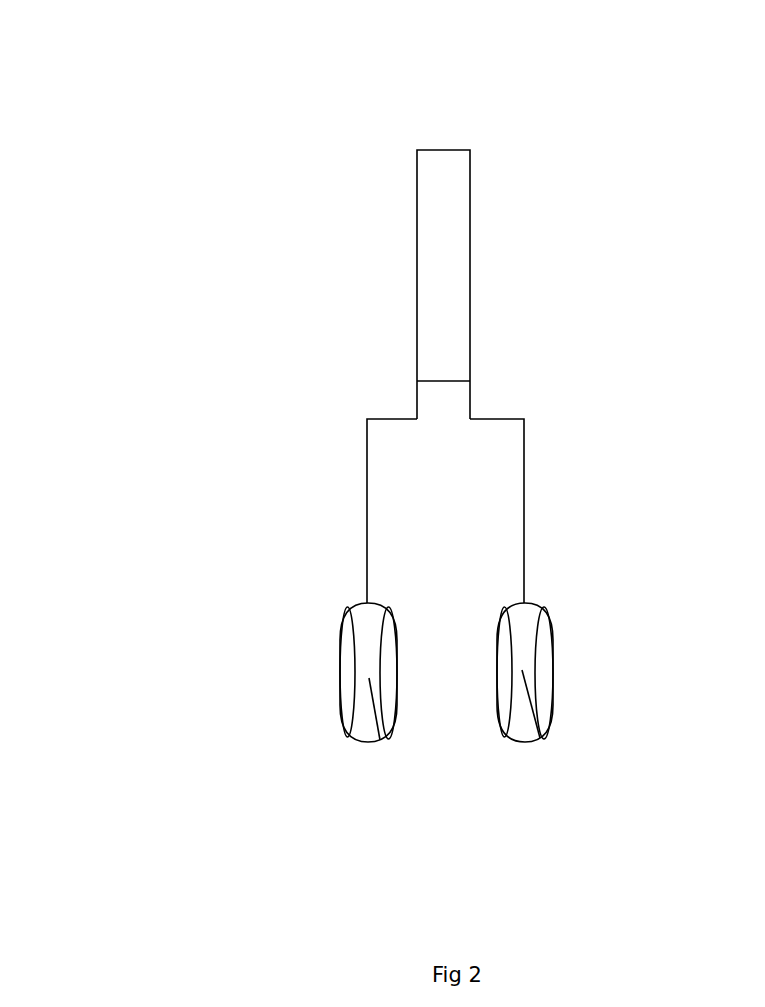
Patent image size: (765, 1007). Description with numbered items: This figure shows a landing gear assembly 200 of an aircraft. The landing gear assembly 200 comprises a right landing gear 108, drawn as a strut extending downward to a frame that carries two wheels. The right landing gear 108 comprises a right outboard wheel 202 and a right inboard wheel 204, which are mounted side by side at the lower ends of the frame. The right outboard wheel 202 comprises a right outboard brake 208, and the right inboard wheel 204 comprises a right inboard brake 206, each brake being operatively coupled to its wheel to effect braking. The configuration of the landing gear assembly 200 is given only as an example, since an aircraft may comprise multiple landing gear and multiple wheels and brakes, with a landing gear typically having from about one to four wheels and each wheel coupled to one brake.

The landing gear assembly 200 is at (127, 75).
The right landing gear 108 is at (485, 248).
The right outboard wheel 202 is at (567, 663).
The right inboard wheel 204 is at (323, 668).
The right inboard brake 206 is at (379, 742).
The right outboard brake 208 is at (540, 742).